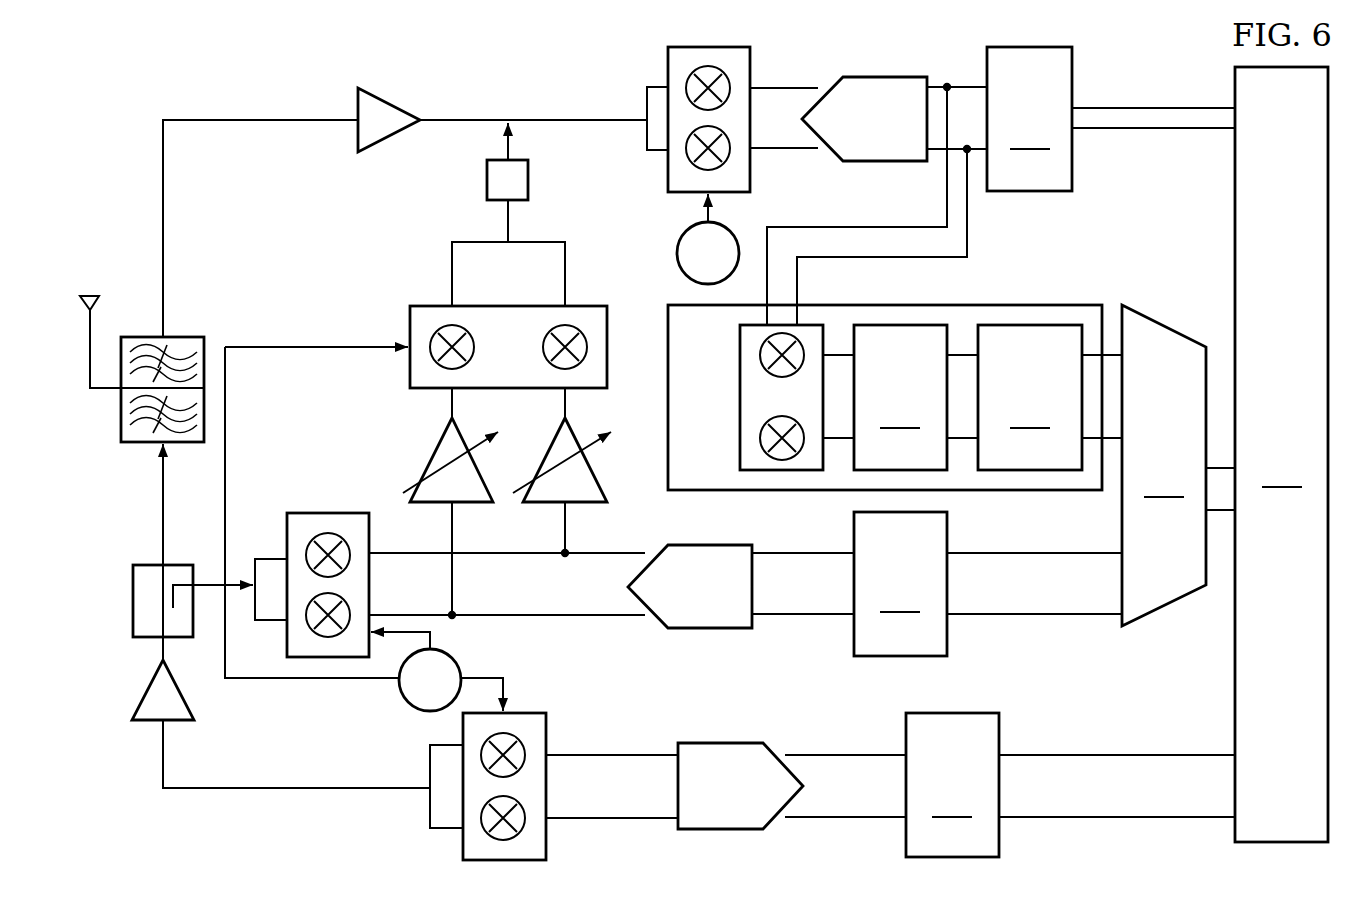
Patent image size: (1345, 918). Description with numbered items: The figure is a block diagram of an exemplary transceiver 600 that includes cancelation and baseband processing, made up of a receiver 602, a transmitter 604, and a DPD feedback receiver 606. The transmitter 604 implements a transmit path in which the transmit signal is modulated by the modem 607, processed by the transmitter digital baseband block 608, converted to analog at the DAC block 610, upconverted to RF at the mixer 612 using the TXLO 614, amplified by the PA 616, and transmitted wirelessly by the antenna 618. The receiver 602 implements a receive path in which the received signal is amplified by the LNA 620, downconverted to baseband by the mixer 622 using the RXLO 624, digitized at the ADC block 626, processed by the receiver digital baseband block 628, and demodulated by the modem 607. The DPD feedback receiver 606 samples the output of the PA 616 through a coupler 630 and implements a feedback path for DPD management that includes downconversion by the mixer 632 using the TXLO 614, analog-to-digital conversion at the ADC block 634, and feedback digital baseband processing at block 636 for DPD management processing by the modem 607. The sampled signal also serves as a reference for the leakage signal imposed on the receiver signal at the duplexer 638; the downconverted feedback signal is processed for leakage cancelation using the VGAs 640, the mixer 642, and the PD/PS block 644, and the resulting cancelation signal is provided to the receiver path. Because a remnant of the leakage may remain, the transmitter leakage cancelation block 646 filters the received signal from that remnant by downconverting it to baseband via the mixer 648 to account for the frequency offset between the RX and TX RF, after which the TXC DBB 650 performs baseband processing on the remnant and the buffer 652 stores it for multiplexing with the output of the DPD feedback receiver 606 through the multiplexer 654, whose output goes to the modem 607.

The transceiver 600 is at (294, 77).
The receiver 602 is at (1097, 166).
The transmitter 604 is at (1034, 830).
The DPD feedback receiver 606 is at (1046, 636).
The modem 607 is at (1281, 454).
The transmitter digital baseband processing block 608 is at (952, 785).
The digital-to-analog conversion block 610 is at (720, 830).
The mixer 612 is at (463, 850).
The TXLO 614 is at (406, 702).
The PA 616 is at (140, 722).
The antenna 618 is at (82, 294).
The LNA 620 is at (390, 103).
The mixer 622 is at (668, 66).
The RXLO 624 is at (678, 253).
The analog-to-digital conversion block 626 is at (884, 162).
The receiver digital baseband processing block 628 is at (1029, 119).
The coupler 630 is at (133, 602).
The mixer 632 is at (327, 513).
The ADC block 634 is at (710, 630).
The feedback digital baseband processing block 636 is at (900, 584).
The duplexer 638 is at (182, 337).
The VGAs 640 is at (430, 453).
The mixer 642 is at (410, 324).
The PD/PS block 644 is at (487, 178).
The transmitter leakage cancelation block 646 is at (1023, 496).
The mixer 648 is at (740, 396).
The TXC DBB 650 is at (900, 397).
The buffer 652 is at (1030, 397).
The multiplexer 654 is at (1164, 465).